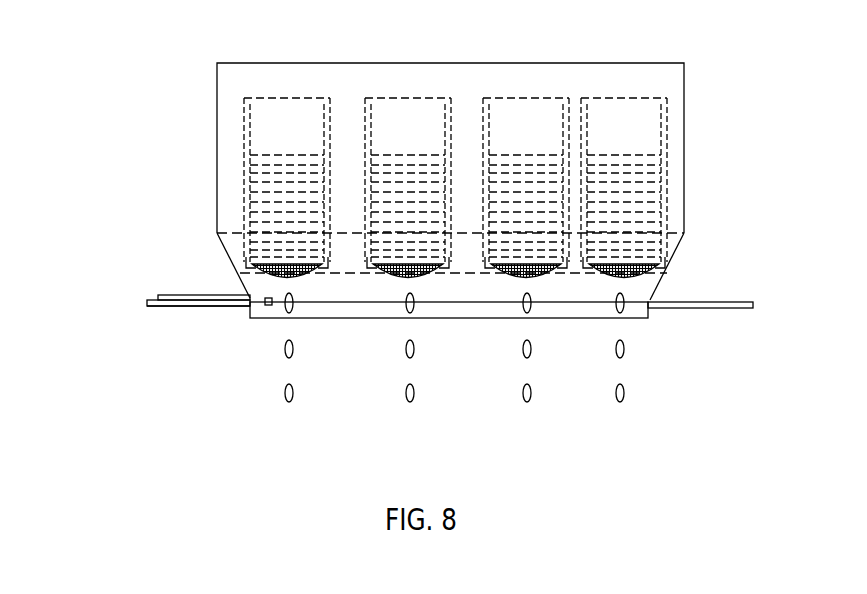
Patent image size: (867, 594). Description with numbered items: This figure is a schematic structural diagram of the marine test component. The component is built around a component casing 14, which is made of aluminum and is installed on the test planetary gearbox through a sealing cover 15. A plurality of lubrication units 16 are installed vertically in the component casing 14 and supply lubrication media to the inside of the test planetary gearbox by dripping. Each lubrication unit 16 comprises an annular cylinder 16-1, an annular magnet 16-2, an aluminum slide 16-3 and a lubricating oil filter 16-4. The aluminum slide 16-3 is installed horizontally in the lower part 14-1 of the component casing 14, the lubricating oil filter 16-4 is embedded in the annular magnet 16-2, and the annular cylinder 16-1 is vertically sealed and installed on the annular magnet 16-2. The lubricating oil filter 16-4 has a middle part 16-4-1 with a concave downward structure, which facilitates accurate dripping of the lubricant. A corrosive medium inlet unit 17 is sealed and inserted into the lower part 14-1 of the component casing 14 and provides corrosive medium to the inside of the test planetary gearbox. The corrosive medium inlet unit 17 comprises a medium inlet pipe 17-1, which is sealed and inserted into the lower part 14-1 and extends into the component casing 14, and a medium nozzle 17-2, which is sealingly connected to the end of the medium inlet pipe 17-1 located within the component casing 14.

The component casing 14 is at (217, 90).
The lower part of the component casing 14-1 is at (393, 307).
The sealing cover 15 is at (210, 305).
The lubrication unit 16 is at (408, 113).
The annular cylinder 16-1 is at (661, 128).
The annular magnet 16-2 is at (649, 303).
The aluminum slide 16-3 is at (572, 275).
The lubricating oil filter 16-4 is at (408, 277).
The middle part of the lubricating oil filter 16-4-1 is at (527, 275).
The corrosive medium inlet unit 17 is at (158, 298).
The medium inlet pipe 17-1 is at (207, 300).
The medium nozzle 17-2 is at (265, 302).